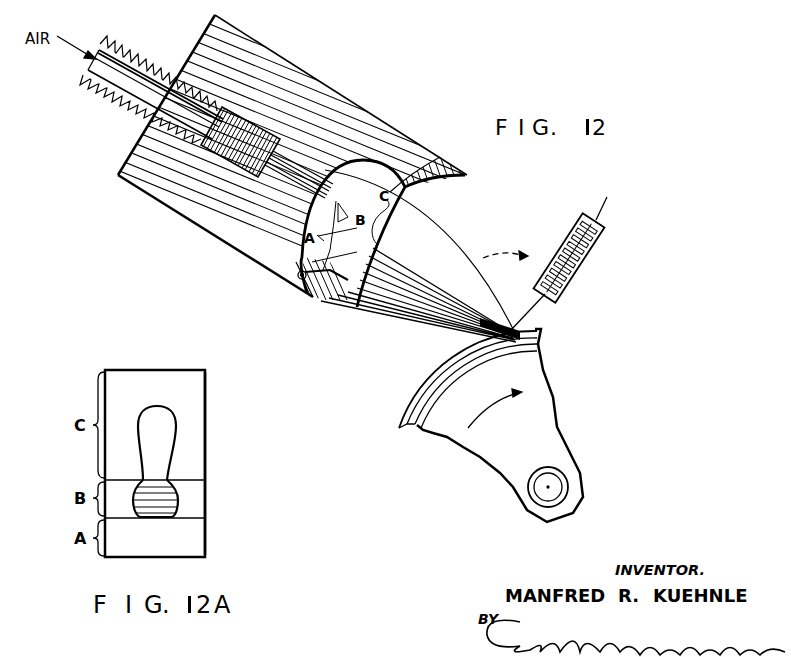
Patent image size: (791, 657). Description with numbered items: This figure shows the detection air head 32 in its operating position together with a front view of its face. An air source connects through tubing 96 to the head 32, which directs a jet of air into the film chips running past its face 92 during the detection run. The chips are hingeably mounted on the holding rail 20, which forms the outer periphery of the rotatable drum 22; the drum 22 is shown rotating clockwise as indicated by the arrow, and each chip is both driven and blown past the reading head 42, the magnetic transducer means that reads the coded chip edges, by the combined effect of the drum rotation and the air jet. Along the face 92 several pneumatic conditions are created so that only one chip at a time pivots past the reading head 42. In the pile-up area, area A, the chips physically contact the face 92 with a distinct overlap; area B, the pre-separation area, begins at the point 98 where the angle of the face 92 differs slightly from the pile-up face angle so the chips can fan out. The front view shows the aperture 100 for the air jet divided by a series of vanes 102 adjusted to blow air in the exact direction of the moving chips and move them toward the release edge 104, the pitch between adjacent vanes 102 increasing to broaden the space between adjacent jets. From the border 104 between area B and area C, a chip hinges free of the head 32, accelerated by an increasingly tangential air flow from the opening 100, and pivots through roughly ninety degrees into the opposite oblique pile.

In FIG. 12, the detection air head 32 is at (310, 90).
In FIG. 12A, the detection air head 32 is at (178, 393).
In FIG. 12, the tubing 96 is at (127, 107).
In FIG. 12, the air head face 92 is at (450, 180).
In FIG. 12A, the air head face 92 is at (193, 428).
In FIG. 12, the aperture 100 is at (372, 240).
In FIG. 12A, the aperture 100 is at (157, 456).
In FIG. 12, the vanes 102 is at (344, 225).
In FIG. 12A, the vanes 102 is at (178, 498).
In FIG. 12, the release edge 104 is at (374, 248).
In FIG. 12A, the release edge 104 is at (190, 479).
In FIG. 12, the point 98 is at (358, 302).
In FIG. 12A, the point 98 is at (190, 517).
In FIG. 12, the magnetic transducer means 42 is at (607, 218).
In FIG. 12, the holding rail 20 is at (406, 409).
In FIG. 12, the drum 22 is at (513, 458).